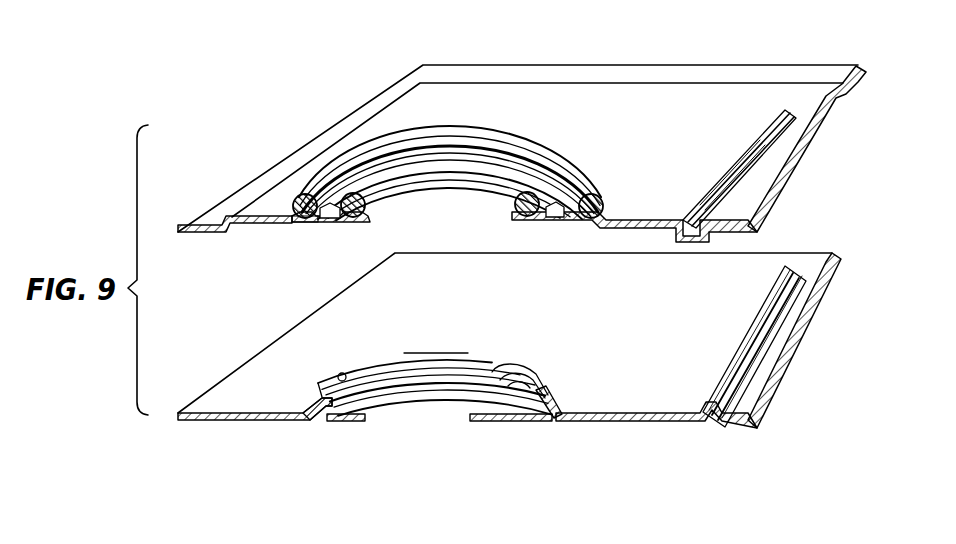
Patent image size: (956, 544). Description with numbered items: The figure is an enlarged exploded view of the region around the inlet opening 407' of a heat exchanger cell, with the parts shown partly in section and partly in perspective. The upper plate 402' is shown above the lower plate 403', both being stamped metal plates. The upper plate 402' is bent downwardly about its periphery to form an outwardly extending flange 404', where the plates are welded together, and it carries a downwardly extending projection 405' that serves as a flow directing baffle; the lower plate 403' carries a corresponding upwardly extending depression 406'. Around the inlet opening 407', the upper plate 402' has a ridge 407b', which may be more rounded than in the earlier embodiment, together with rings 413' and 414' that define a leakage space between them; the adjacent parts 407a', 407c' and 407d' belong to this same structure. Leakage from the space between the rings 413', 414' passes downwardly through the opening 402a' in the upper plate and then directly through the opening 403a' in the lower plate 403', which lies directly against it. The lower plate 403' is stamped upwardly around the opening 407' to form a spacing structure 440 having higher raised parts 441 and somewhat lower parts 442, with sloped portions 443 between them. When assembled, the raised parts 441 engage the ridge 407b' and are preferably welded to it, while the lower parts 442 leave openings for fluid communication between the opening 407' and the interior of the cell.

The upper plate 402' is at (522, 136).
The outwardly extending flange 404' is at (235, 175).
The opening 402a' is at (479, 163).
The ring 413' is at (450, 164).
The ring 414' is at (453, 160).
The inlet opening 407' is at (448, 315).
The bearing ball 407a' is at (361, 226).
The ridge 407b' is at (409, 241).
The bearing seat 407c' is at (255, 238).
The bearing ball 407d' is at (374, 199).
The downwardly extending projection 405' is at (716, 169).
The lower plate 403' is at (509, 340).
The opening 403a' is at (331, 354).
The spacing structure 440 is at (461, 349).
The higher raised parts 441 is at (520, 372).
The lower parts 442 is at (313, 408).
The sloped wall 443 is at (547, 390).
The upwardly extending depression 406' is at (774, 346).